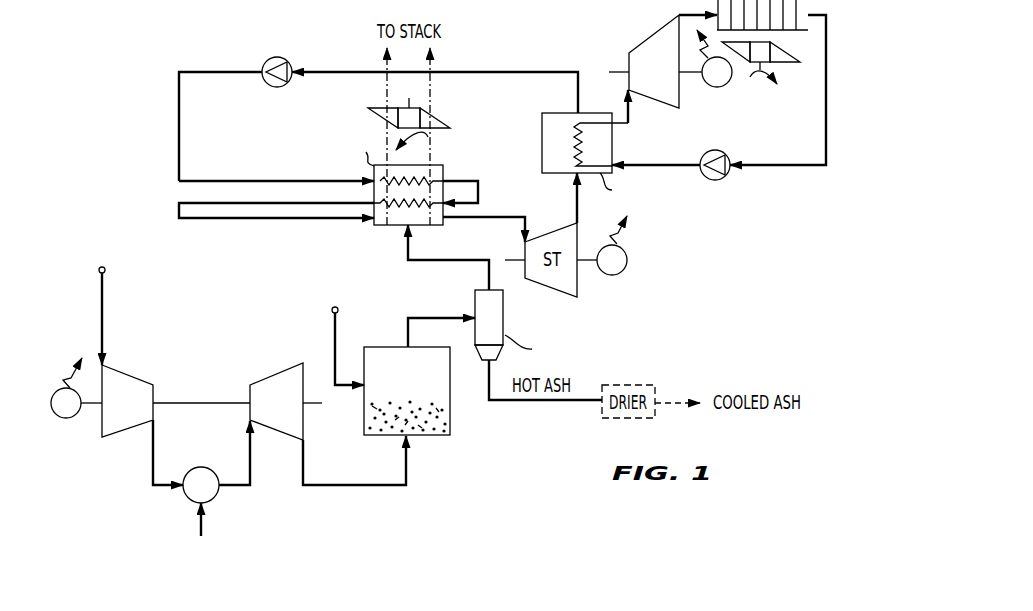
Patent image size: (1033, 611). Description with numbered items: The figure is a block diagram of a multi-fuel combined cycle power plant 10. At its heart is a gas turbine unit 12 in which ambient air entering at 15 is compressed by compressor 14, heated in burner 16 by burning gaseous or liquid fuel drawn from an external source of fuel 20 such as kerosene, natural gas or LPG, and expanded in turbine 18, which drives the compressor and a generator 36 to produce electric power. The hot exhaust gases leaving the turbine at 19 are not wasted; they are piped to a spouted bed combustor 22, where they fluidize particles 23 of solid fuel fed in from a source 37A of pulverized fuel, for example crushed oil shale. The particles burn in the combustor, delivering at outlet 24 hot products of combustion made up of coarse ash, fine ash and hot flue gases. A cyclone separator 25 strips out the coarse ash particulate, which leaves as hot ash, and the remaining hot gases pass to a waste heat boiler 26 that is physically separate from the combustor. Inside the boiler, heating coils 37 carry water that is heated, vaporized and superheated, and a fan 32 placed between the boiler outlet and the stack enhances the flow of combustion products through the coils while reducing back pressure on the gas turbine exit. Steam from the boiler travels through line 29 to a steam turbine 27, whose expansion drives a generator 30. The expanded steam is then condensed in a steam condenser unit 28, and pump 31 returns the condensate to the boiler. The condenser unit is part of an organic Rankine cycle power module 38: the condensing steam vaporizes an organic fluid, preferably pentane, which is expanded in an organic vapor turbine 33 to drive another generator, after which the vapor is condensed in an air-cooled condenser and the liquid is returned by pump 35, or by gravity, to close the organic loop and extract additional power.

The power plant 10 is at (121, 116).
The gas turbine unit 12 is at (210, 392).
The compressor 14 is at (122, 432).
The ambient air inlet 15 is at (104, 312).
The burner 16 is at (205, 467).
The turbine 18 is at (290, 437).
The turbine exhaust line 19 is at (305, 446).
The external source of fuel 20 is at (206, 530).
The spouted bed combustor 22 is at (423, 414).
The particles of solid fuel 23 is at (450, 425).
The outlet 24 is at (440, 318).
The cyclone separator 25 is at (505, 318).
The waste heat boiler 26 is at (172, 195).
The steam turbine 27 is at (545, 232).
The steam condenser unit 28 is at (535, 136).
The steam line 29 is at (482, 213).
The generator 30 is at (628, 258).
The pump 31 is at (282, 57).
The fan 32 is at (378, 108).
The organic vapor turbine 33 is at (655, 46).
The pump 35 is at (722, 182).
The generator 36 is at (66, 419).
The heating coils 37 is at (437, 167).
The source of pulverized fuel 37A is at (330, 312).
The organic Rankine cycle power module 38 is at (790, 128).